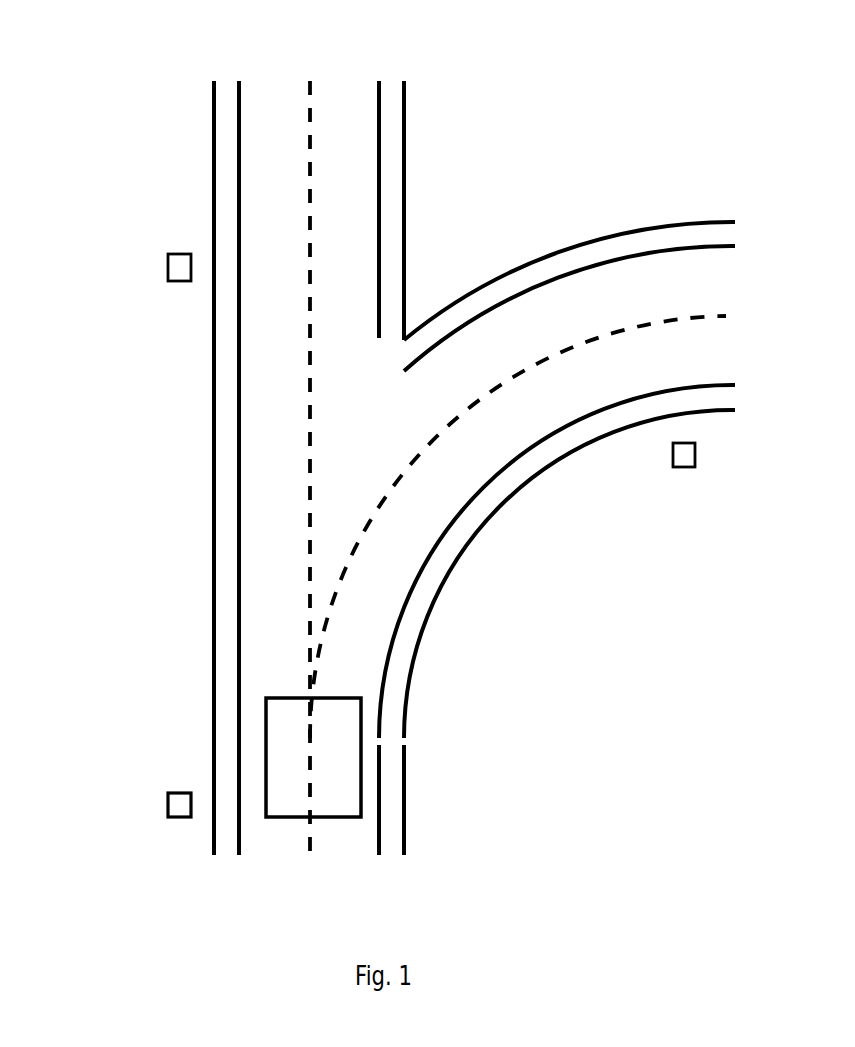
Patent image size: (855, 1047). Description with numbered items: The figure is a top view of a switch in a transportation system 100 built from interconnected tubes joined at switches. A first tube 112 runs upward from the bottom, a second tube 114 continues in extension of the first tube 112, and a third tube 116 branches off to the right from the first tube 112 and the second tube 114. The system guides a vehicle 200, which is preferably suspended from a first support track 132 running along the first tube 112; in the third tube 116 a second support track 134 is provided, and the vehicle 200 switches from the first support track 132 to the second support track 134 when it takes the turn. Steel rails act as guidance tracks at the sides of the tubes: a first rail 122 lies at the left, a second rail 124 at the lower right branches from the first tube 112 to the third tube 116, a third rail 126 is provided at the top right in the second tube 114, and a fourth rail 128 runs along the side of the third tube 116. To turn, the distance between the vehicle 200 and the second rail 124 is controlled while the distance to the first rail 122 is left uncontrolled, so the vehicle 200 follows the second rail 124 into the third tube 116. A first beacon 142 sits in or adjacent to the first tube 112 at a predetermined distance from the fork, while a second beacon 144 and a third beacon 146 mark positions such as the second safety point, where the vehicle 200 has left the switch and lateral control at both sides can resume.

The transportation system 100 is at (789, 783).
The first tube 112 is at (404, 807).
The second tube 114 is at (404, 153).
The third tube 116 is at (552, 466).
The first rail 122 is at (239, 197).
The second rail 124 is at (385, 668).
The third rail 126 is at (379, 243).
The fourth rail 128 is at (560, 275).
The first support track 132 is at (308, 93).
The second support track 134 is at (657, 320).
The first beacon 142 is at (167, 808).
The second beacon 144 is at (167, 271).
The third beacon 146 is at (683, 468).
The vehicle 200 is at (265, 700).